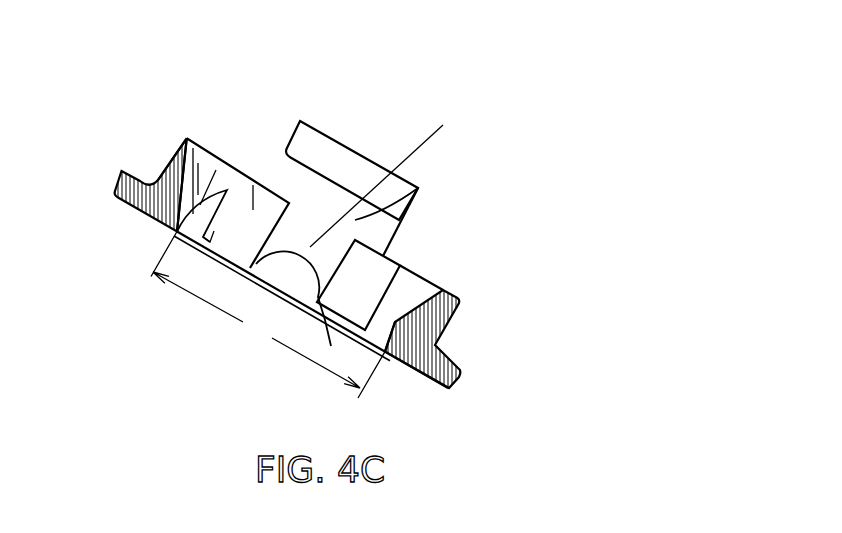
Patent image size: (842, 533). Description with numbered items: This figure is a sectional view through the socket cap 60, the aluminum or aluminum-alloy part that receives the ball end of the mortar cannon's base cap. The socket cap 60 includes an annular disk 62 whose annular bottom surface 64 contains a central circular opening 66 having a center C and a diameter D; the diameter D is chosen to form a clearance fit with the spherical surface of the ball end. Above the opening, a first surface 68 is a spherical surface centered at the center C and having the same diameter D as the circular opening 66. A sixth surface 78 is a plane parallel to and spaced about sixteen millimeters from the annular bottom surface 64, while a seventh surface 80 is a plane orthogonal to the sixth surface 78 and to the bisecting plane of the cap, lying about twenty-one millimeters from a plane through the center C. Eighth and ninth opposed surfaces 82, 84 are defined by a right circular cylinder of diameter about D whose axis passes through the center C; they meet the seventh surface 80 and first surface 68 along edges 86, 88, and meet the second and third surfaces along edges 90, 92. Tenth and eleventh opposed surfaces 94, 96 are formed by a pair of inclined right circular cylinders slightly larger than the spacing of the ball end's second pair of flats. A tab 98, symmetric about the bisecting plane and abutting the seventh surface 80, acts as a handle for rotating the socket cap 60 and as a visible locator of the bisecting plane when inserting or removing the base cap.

The socket cap 60 is at (93, 72).
The annular disk 62 is at (124, 189).
The annular bottom surface 64 is at (140, 217).
The central circular opening 66 is at (304, 336).
The first surface 68 is at (227, 190).
The sixth surface 78 is at (191, 137).
The seventh surface 80 is at (418, 188).
The eighth surface 82 is at (254, 184).
The ninth surface 84 is at (378, 269).
The edge 86 is at (232, 244).
The edge 88 is at (331, 346).
The edge 90 is at (205, 238).
The edge 92 is at (383, 353).
The tenth surface 94 is at (216, 170).
The eleventh surface 96 is at (418, 283).
The tab 98 is at (349, 168).
The center C is at (385, 179).
The diameter D is at (268, 315).